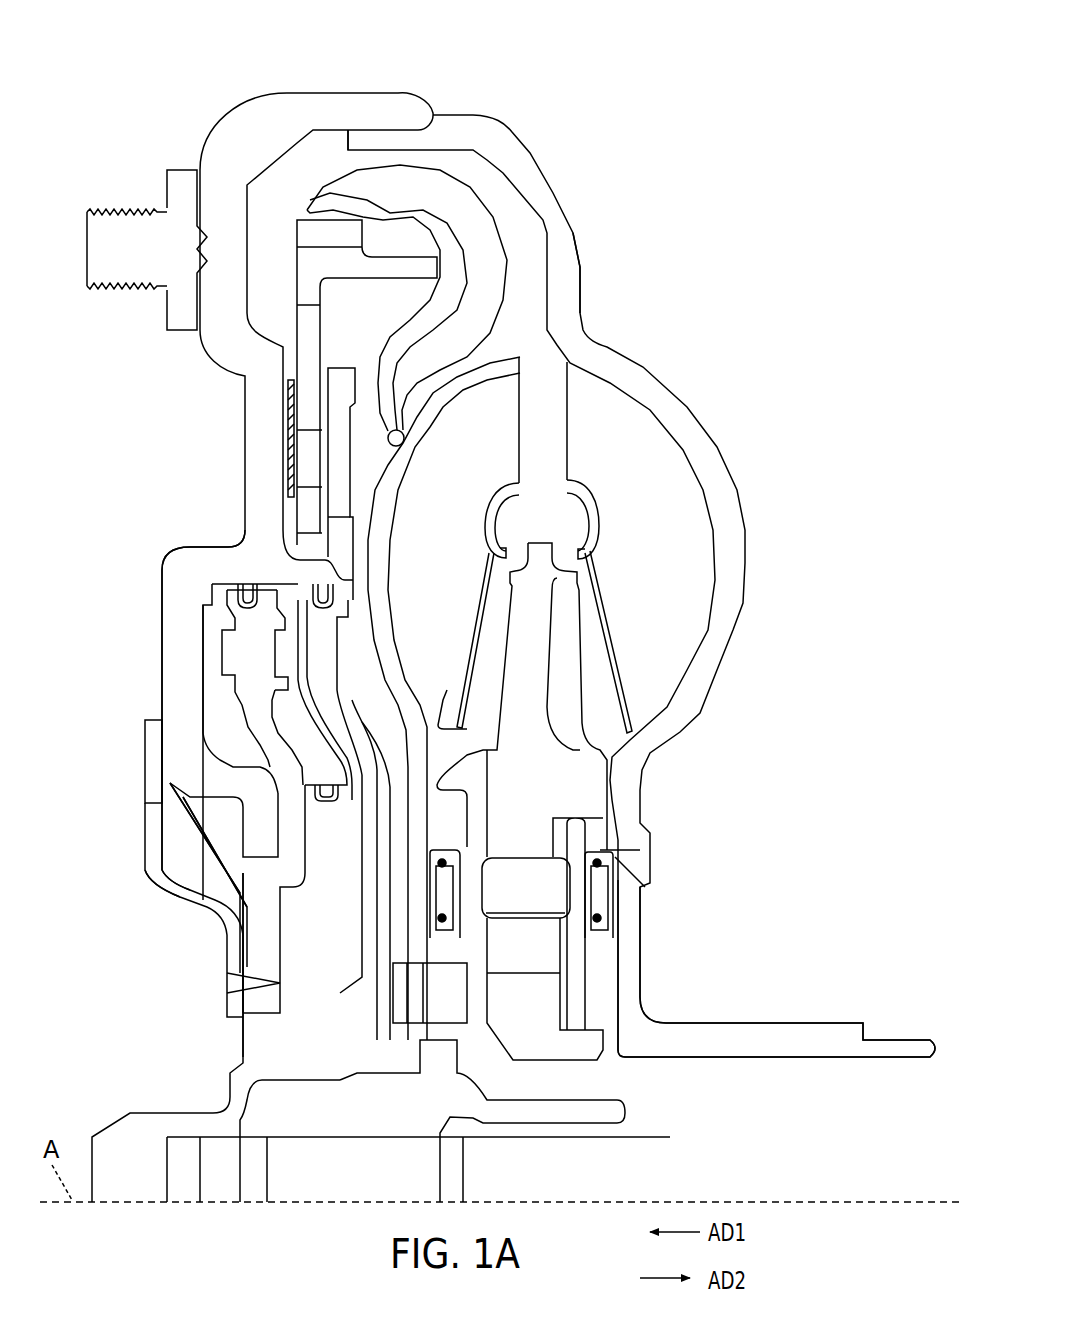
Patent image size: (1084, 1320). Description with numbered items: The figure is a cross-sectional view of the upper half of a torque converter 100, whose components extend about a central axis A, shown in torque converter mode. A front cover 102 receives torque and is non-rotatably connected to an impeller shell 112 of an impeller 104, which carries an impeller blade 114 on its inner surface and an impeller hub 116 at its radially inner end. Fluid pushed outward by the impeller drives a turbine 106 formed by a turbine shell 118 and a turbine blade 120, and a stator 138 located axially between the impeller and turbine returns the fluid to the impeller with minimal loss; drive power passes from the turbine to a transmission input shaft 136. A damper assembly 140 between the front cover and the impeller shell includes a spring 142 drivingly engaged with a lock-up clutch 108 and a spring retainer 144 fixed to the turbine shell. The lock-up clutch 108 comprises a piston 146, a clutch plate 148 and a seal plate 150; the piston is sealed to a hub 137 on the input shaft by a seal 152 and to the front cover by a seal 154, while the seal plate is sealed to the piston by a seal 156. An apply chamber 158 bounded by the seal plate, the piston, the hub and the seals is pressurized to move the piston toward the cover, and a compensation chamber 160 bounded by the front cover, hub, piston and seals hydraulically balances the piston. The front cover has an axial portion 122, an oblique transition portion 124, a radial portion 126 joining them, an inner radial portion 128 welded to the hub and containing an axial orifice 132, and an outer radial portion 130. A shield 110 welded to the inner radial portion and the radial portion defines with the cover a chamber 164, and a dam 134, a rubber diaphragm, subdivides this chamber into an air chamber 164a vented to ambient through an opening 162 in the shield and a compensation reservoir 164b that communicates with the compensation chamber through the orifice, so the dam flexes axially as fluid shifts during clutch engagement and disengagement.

The torque converter 100 is at (710, 93).
The front cover 102 is at (222, 108).
The impeller 104 is at (517, 123).
The turbine 106 is at (517, 347).
The lock-up clutch 108 is at (297, 548).
The shield 110 is at (173, 887).
The impeller shell 112 is at (583, 265).
The impeller blade 114 is at (643, 477).
The impeller hub 116 is at (640, 968).
The turbine shell 118 is at (440, 413).
The turbine blade 120 is at (447, 574).
The axial portion 122 is at (200, 543).
The transition portion 124 is at (233, 810).
The radial portion 126 is at (160, 632).
The inner radial portion 128 is at (227, 963).
The outer radial portion 130 is at (245, 420).
The orifice 132 is at (240, 947).
The dam 134 is at (188, 818).
The transmission input shaft 136 is at (197, 1173).
The hub 137 is at (330, 1100).
The stator 138 is at (582, 665).
The damper assembly 140 is at (447, 167).
The spring 142 is at (352, 337).
The spring retainer 144 is at (362, 192).
The piston 146 is at (240, 707).
The clutch plate 148 is at (292, 318).
The seal plate 150 is at (367, 733).
The seal 152 is at (330, 800).
The seal 154 is at (250, 590).
The seal 156 is at (327, 610).
The apply chamber 158 is at (303, 693).
The compensation chamber 160 is at (207, 640).
The opening 162 is at (155, 800).
The chamber 164 is at (200, 863).
The air chamber 164a is at (167, 855).
The compensation reservoir 164b is at (236, 800).